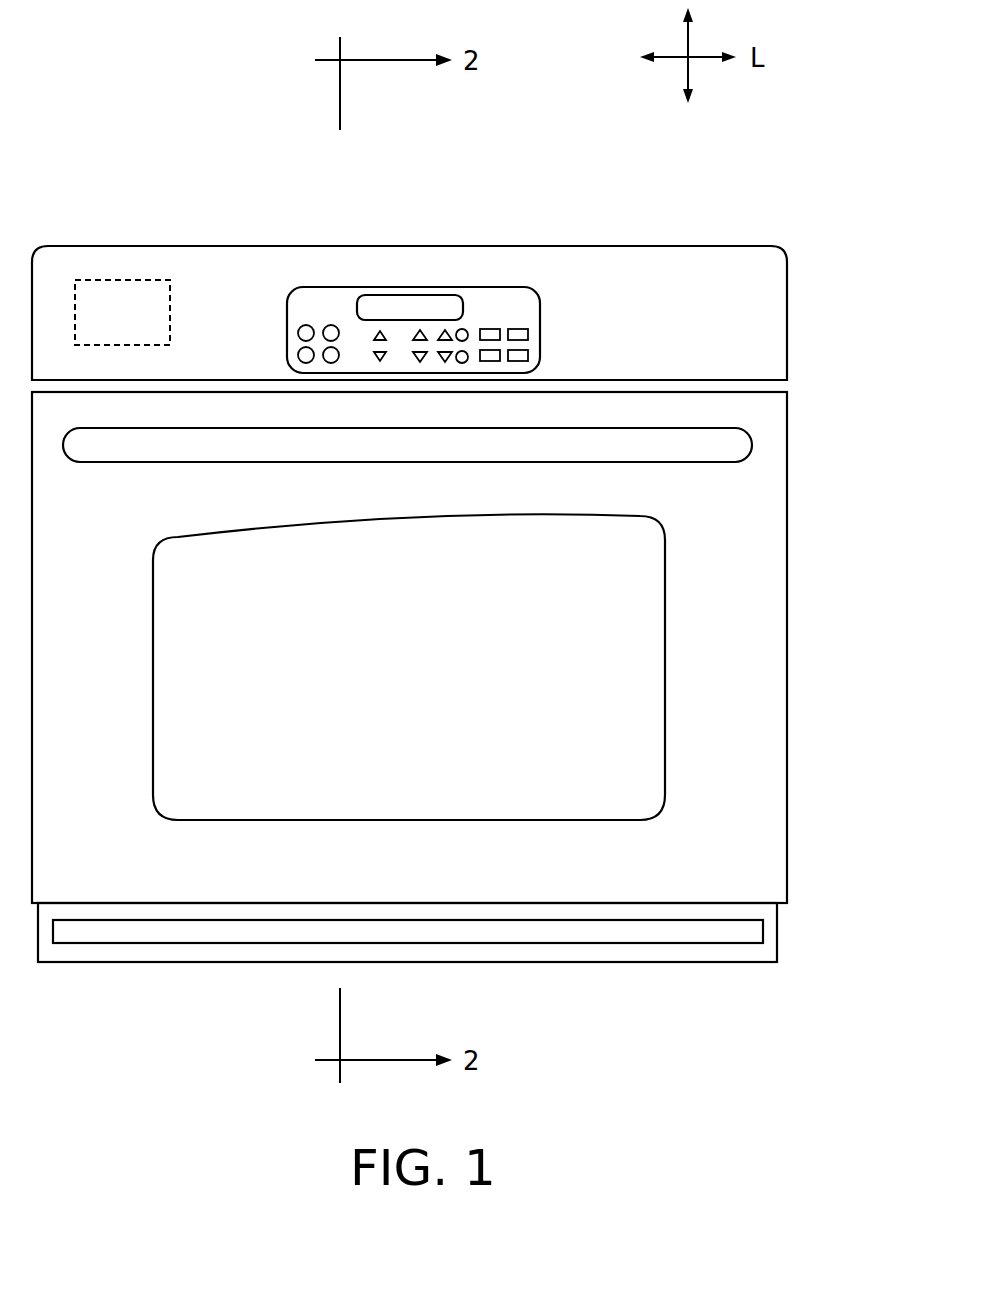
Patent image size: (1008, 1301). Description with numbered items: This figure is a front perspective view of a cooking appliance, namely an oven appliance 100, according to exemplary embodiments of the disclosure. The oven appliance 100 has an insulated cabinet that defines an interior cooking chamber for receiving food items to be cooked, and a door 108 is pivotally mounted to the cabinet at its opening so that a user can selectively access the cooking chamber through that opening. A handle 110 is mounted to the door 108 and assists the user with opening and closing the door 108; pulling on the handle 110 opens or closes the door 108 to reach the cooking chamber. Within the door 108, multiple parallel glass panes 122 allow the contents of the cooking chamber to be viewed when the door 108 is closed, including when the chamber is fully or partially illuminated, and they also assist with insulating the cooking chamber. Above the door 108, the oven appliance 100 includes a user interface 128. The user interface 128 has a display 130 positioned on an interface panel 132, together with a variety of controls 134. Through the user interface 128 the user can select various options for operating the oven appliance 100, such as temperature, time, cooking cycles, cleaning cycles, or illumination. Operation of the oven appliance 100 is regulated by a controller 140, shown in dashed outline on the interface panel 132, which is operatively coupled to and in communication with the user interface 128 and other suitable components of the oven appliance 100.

The oven appliance 100 is at (108, 83).
The door 108 is at (733, 578).
The handle 110 is at (720, 440).
The glass panes 122 is at (645, 690).
The user interface 128 is at (490, 305).
The display 130 is at (407, 305).
The interface panel 132 is at (690, 275).
The controls 134 is at (313, 333).
The controller 140 is at (113, 280).